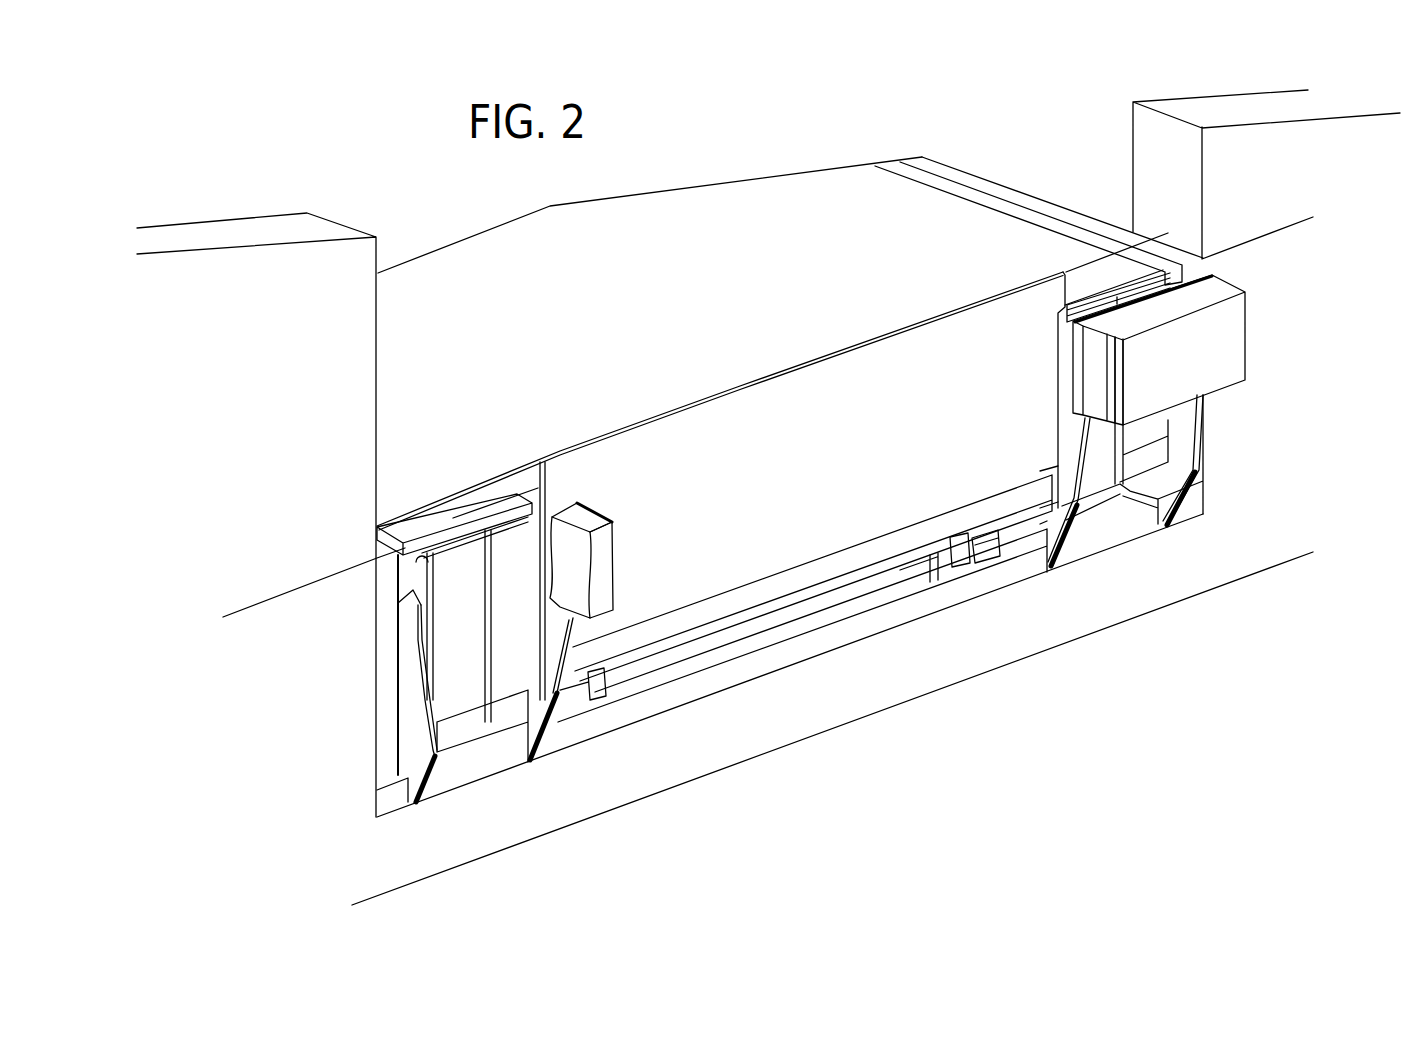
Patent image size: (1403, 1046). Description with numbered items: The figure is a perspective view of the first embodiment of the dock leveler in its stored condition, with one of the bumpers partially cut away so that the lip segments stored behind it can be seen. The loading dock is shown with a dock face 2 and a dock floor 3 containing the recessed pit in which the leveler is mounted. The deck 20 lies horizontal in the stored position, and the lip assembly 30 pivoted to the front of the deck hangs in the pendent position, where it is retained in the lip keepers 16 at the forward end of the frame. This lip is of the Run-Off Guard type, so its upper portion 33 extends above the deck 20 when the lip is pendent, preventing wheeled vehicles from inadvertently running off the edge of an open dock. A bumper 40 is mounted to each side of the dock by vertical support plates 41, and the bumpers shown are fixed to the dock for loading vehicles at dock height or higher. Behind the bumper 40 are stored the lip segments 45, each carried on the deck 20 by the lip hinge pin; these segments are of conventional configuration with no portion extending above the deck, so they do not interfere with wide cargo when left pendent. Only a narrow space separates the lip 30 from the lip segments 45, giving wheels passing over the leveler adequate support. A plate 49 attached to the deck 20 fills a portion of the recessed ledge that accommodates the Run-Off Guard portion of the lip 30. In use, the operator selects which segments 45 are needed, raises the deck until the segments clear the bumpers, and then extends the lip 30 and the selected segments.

The dock face 2 is at (1218, 570).
The dock floor 3 is at (1048, 187).
The lip keepers 16 is at (963, 558).
The deck 20 is at (753, 188).
The lip assembly 30 is at (766, 378).
The upper portion of the lip 33 is at (1013, 297).
The bumper 40 is at (607, 548).
The vertical support plates 41 is at (553, 723).
The lip segments 45 is at (517, 537).
The plate 49 is at (443, 510).